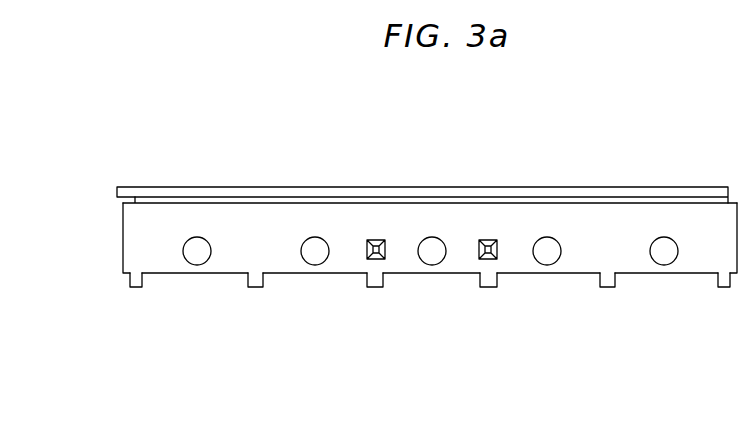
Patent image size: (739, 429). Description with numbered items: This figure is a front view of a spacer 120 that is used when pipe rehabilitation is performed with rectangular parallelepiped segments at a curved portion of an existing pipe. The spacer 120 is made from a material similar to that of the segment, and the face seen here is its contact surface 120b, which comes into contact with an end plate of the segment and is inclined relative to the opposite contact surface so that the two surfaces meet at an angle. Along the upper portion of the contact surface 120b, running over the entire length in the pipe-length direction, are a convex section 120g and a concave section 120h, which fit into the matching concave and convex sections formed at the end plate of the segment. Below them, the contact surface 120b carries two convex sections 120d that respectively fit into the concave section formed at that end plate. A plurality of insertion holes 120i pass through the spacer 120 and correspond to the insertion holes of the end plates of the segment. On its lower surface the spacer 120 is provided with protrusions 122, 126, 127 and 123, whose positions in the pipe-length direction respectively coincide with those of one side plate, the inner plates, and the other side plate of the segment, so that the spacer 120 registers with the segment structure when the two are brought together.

The spacer 120 is at (427, 254).
The contact surface 120b is at (580, 255).
The convex sections 120d is at (367, 259).
The convex section 120g is at (485, 203).
The concave section 120h is at (372, 186).
The insertion holes 120i is at (197, 265).
The protrusion 122 is at (725, 287).
The protrusion 123 is at (136, 287).
The protrusion 126 is at (254, 287).
The protrusion 127 is at (370, 287).